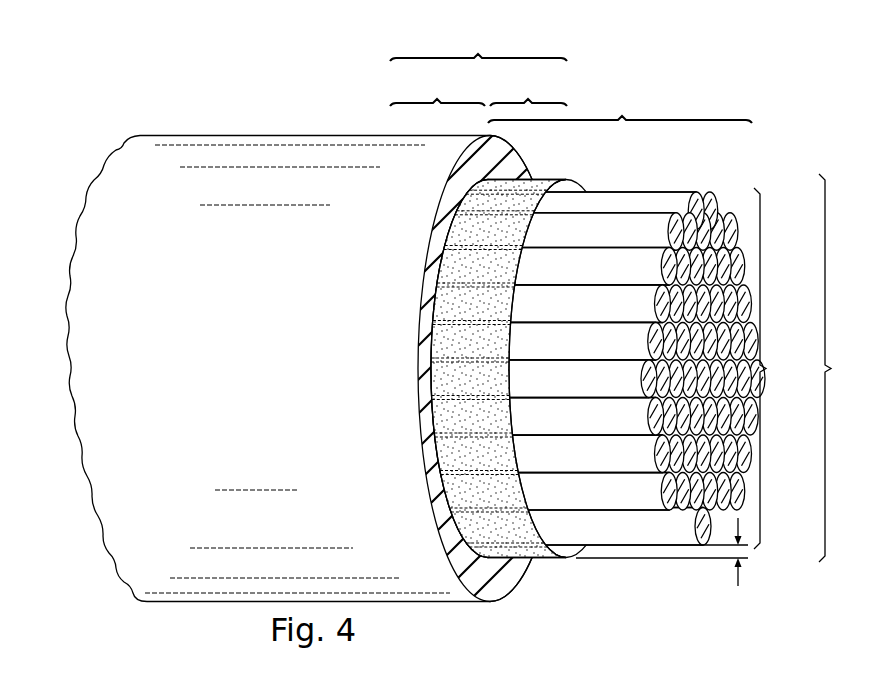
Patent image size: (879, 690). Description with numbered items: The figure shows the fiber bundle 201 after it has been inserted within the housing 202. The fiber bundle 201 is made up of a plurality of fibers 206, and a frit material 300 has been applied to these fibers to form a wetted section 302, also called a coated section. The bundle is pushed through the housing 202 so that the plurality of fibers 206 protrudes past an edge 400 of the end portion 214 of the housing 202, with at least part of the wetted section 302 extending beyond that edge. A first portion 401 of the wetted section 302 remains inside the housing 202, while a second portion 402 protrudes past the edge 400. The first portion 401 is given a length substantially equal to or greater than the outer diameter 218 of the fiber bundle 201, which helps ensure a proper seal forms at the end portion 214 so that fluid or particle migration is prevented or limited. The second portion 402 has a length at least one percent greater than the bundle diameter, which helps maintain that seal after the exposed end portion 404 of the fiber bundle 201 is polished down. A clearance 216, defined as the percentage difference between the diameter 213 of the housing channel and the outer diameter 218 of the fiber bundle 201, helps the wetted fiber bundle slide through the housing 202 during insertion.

The fiber bundle 201 is at (622, 343).
The housing 202 is at (317, 135).
The plurality of fibers 206 is at (625, 200).
The diameter of the channel 213 is at (847, 368).
The end portion 214 is at (395, 340).
The clearance 216 is at (742, 578).
The outer diameter of the fiber bundle 218 is at (783, 368).
The frit material 300 is at (547, 559).
The wetted section 302 is at (478, 43).
The edge 400 is at (504, 601).
The first portion 401 is at (437, 88).
The second portion 402 is at (528, 88).
The exposed end portion 404 is at (620, 105).